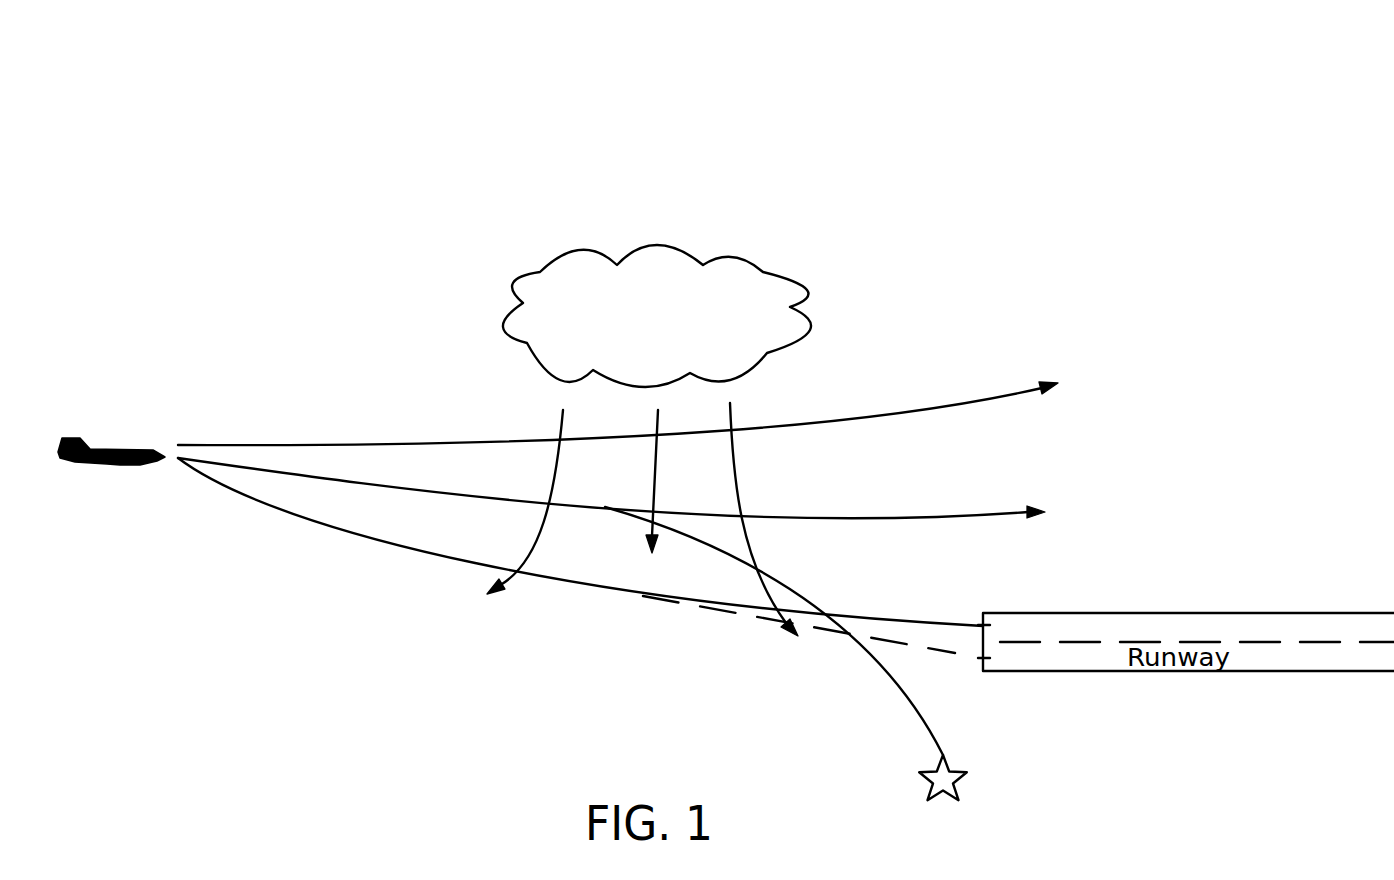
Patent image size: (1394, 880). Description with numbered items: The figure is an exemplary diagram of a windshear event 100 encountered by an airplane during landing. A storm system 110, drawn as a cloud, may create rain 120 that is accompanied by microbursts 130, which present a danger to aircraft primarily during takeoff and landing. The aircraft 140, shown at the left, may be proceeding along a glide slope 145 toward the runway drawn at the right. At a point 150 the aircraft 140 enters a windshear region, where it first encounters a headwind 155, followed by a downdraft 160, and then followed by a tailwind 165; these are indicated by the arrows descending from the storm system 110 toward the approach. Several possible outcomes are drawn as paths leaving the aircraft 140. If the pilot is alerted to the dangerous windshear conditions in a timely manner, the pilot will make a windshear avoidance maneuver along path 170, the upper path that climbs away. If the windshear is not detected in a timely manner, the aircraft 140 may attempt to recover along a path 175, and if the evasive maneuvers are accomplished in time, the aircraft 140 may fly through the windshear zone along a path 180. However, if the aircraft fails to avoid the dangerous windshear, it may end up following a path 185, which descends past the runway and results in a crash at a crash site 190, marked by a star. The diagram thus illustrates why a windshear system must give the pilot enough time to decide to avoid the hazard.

The windshear event 100 is at (750, 138).
The storm system 110 is at (712, 276).
The rain 120 is at (690, 411).
The microbursts 130 is at (545, 632).
The aircraft 140 is at (118, 449).
The glide slope 145 is at (920, 648).
The point 150 is at (177, 460).
The headwind 155 is at (486, 594).
The downdraft 160 is at (647, 536).
The tailwind 165 is at (747, 536).
The path 170 is at (435, 446).
The path 175 is at (525, 502).
The path 180 is at (955, 518).
The path 185 is at (897, 683).
The crash site 190 is at (949, 761).